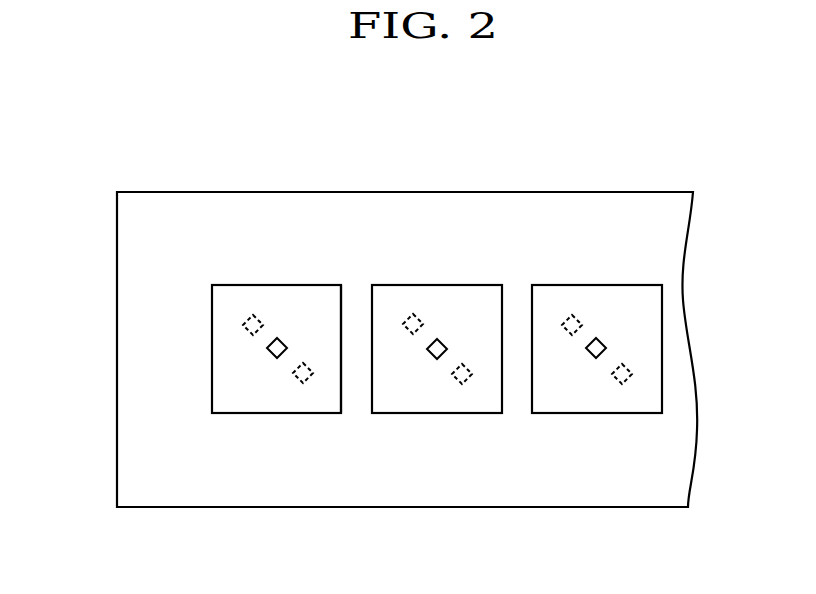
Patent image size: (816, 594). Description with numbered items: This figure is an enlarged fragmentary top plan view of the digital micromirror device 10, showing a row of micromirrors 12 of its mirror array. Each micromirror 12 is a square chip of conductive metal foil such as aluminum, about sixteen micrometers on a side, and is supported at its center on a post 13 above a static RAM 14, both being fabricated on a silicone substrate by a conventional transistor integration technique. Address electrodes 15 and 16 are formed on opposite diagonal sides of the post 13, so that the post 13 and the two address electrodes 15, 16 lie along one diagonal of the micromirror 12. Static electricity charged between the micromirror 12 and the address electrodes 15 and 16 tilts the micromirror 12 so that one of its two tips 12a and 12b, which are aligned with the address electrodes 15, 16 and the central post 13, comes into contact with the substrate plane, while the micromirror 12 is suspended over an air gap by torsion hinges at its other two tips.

The digital micromirror device 10 is at (583, 172).
The micromirror 12 is at (395, 295).
The tip 12a is at (212, 285).
The tip 12b is at (341, 413).
The post 13 is at (282, 342).
The static RAM 14 is at (169, 186).
The address electrode 15 is at (250, 314).
The address electrode 16 is at (301, 385).